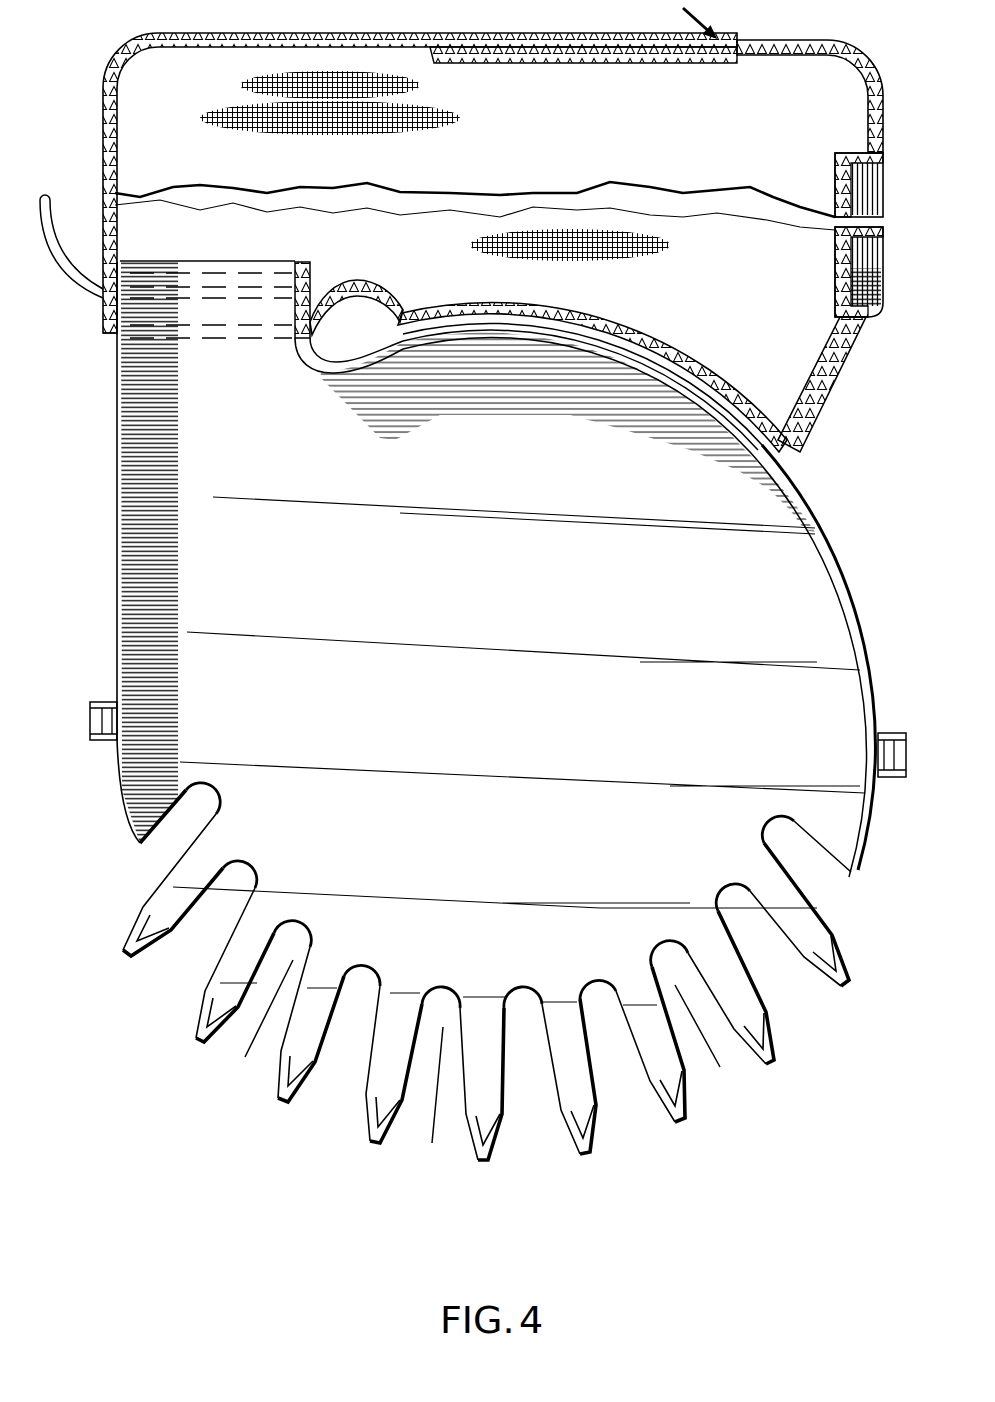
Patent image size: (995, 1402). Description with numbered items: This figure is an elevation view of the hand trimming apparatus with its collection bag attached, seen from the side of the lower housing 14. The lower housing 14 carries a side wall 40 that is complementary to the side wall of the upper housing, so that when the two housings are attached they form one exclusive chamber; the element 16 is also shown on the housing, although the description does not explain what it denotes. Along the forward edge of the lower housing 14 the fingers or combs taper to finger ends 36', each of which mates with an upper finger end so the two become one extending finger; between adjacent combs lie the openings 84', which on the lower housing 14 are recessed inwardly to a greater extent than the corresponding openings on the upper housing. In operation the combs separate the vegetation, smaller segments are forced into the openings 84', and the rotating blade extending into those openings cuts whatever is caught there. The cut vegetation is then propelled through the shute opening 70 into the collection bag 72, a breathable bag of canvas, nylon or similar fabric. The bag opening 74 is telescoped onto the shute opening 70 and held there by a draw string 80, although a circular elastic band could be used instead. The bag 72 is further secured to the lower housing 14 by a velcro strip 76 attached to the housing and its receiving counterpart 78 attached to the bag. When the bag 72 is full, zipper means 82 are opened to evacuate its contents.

The lower housing 14 is at (870, 818).
The drum mounting bracket 16 is at (88, 716).
The finger end 36' is at (486, 985).
The side wall 40 is at (117, 486).
The shute opening 70 is at (198, 268).
The collection bag 72 is at (837, 45).
The bag opening 74 is at (103, 333).
The velcro strip 76 is at (582, 336).
The velcro receiving counterpart 78 is at (613, 338).
The draw string 80 is at (50, 230).
The zipper means 82 is at (530, 35).
The openings 84' is at (482, 1073).